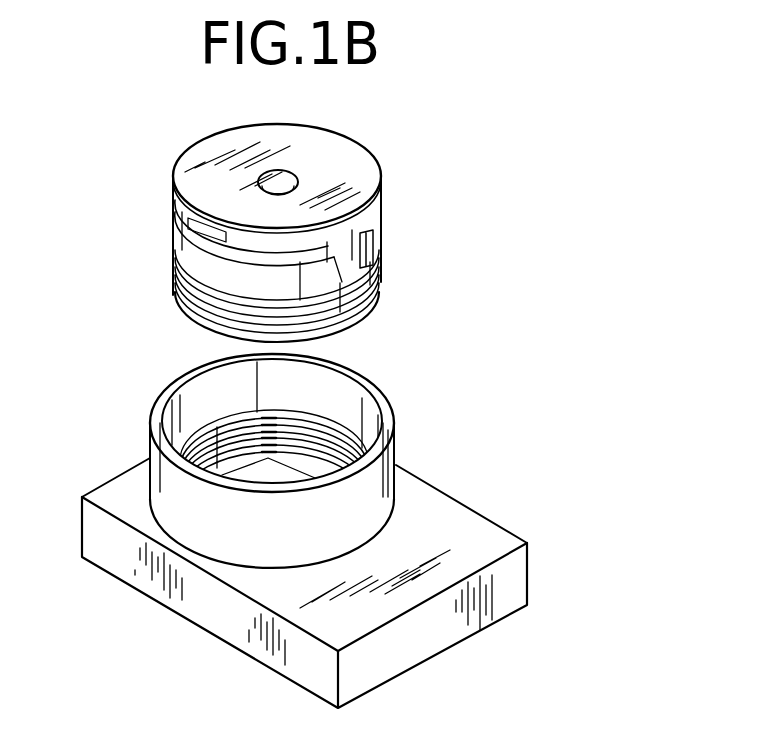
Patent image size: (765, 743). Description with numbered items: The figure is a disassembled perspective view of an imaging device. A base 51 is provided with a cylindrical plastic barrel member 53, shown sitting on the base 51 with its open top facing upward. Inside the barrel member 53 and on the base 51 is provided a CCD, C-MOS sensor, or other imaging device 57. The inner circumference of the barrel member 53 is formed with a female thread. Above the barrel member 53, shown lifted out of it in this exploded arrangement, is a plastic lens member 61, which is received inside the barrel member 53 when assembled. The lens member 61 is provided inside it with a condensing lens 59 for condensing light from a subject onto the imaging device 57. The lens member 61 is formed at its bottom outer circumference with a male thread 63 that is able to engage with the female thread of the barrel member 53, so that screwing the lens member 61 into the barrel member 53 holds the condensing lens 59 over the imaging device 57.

The base 51 is at (460, 522).
The barrel member 53 is at (383, 473).
The imaging device 57 is at (293, 475).
The condensing lens 59 is at (210, 430).
The lens member 61 is at (345, 165).
The male thread 63 is at (375, 285).